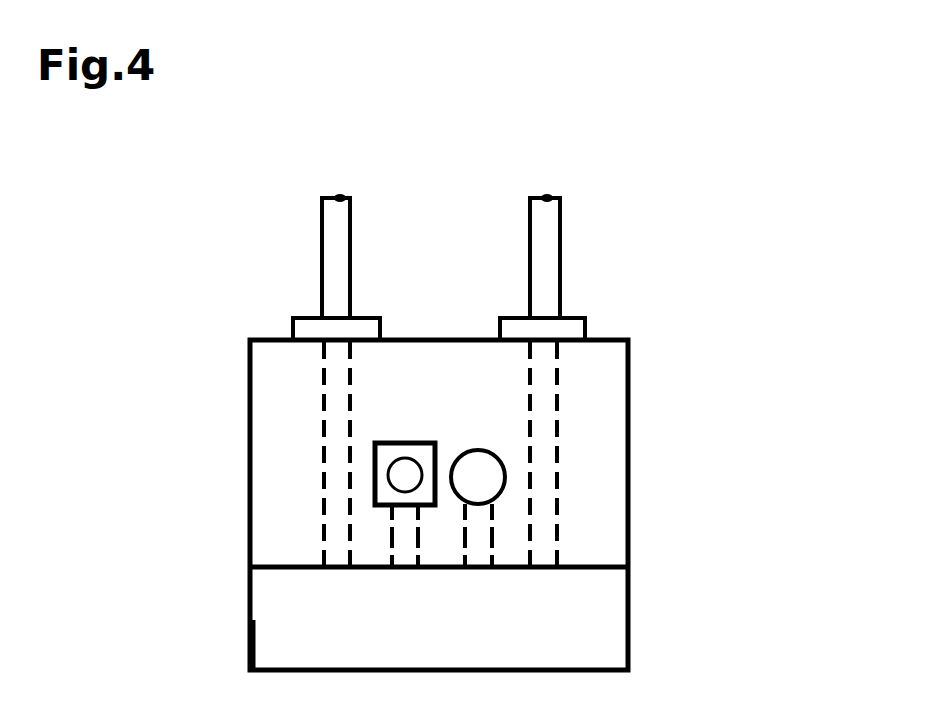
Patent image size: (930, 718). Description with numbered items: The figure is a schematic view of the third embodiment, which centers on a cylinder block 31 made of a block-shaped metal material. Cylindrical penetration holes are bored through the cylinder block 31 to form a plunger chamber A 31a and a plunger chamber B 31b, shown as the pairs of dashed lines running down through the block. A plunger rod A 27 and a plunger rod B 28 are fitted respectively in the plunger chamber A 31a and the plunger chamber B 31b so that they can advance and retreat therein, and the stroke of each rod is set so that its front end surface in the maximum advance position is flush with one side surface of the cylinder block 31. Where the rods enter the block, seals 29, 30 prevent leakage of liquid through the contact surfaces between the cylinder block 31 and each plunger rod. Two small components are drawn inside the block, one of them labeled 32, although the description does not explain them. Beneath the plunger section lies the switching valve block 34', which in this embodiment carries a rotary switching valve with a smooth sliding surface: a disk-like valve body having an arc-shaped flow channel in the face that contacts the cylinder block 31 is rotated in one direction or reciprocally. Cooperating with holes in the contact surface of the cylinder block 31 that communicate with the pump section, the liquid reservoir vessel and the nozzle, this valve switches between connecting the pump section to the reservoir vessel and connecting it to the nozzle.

The plunger rod A 27 is at (322, 242).
The plunger rod B 28 is at (560, 238).
The seal 29 is at (295, 325).
The seal 30 is at (588, 327).
The cylinder block 31 is at (630, 533).
The plunger chamber A 31a is at (323, 470).
The plunger chamber B 31b is at (558, 393).
The circuit element 32 is at (375, 448).
The switching valve block 34' is at (544, 633).